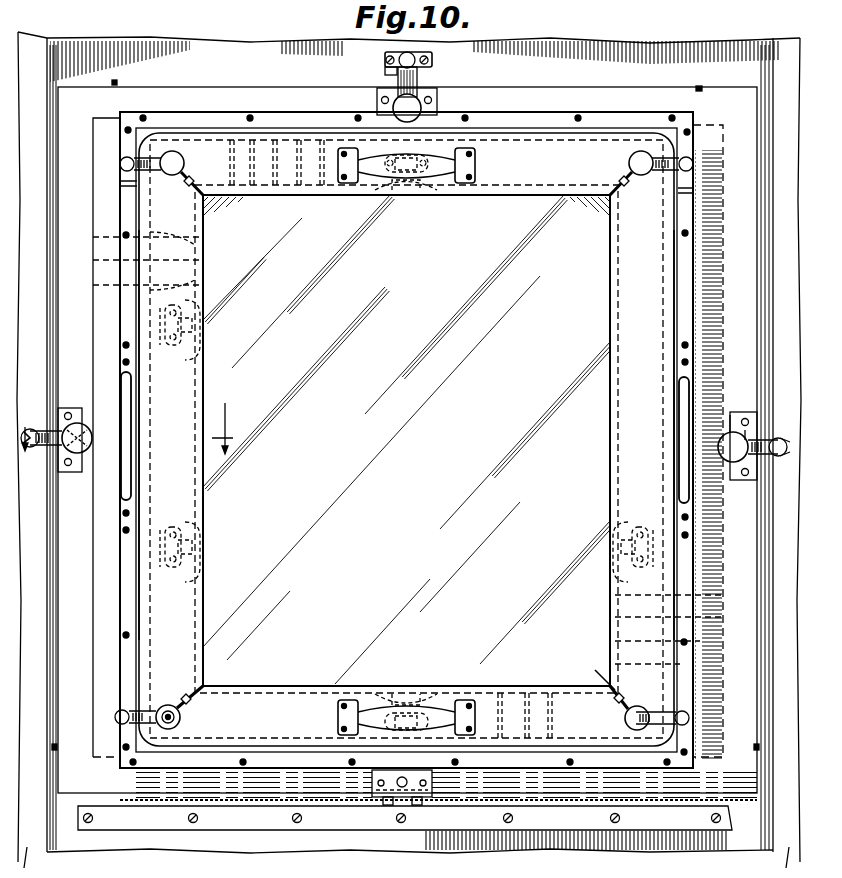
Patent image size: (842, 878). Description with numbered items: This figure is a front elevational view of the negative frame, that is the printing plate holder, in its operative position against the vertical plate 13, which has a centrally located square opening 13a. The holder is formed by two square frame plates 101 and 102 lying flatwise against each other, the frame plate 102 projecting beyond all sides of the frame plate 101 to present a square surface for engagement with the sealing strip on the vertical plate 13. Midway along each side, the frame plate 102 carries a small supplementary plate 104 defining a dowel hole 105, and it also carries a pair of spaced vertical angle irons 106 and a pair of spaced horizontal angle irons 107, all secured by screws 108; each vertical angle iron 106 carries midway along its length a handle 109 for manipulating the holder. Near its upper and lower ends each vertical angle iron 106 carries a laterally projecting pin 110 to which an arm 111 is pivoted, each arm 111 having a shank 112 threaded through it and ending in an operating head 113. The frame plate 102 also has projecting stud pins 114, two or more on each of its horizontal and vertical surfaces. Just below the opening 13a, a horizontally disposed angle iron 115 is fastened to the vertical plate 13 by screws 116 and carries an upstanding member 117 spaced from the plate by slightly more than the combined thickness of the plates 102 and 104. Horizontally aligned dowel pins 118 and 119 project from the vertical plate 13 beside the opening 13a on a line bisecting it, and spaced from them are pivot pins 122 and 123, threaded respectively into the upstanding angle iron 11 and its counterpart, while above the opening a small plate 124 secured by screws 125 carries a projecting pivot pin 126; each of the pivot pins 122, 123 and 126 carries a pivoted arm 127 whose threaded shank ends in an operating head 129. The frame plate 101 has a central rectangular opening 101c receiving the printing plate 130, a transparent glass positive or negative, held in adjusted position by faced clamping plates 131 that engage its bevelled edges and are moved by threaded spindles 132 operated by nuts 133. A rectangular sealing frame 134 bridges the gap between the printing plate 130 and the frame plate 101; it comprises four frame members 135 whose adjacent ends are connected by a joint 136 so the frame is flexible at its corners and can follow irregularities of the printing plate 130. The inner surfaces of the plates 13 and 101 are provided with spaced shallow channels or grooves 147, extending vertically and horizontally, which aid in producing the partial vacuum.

The upstanding angle iron 11 is at (408, 640).
The vertical plate 13 is at (255, 47).
The square opening 13a is at (93, 340).
The frame plate 101 is at (99, 763).
The central rectangular opening 101c is at (190, 602).
The frame plate 102 is at (202, 95).
The supplementary plate 104 is at (377, 103).
The dowel hole 105 is at (80, 435).
The vertical angle iron 106 is at (687, 217).
The horizontal angle iron 107 is at (546, 118).
The screws 108 is at (126, 128).
The handle 109 is at (127, 388).
The laterally projecting pin 110 is at (118, 712).
The arm 111 is at (147, 715).
The shank 112 is at (182, 712).
The operating head 113 is at (180, 722).
The stud pins 114 is at (115, 82).
The horizontally disposed angle iron 115 is at (648, 822).
The screws 116 is at (298, 822).
The upstanding member 117 is at (380, 798).
The dowel pin 118 is at (78, 428).
The dowel pin 119 is at (730, 415).
The pivot pin 122 is at (30, 447).
The pivot pin 123 is at (782, 455).
The small plate 124 is at (432, 58).
The screws 125 is at (430, 60).
The projecting pivot pin 126 is at (390, 58).
The pivoted arm 127 is at (138, 158).
The operating head 129 is at (174, 165).
The printing plate 130 is at (406, 440).
The clamping plates 131 is at (197, 543).
The threaded spindles 132 is at (612, 546).
The nuts 133 is at (200, 323).
The sealing frame 134 is at (503, 200).
The frame members 135 is at (590, 172).
The joint 136 is at (589, 672).
The channels or grooves 147 is at (200, 245).